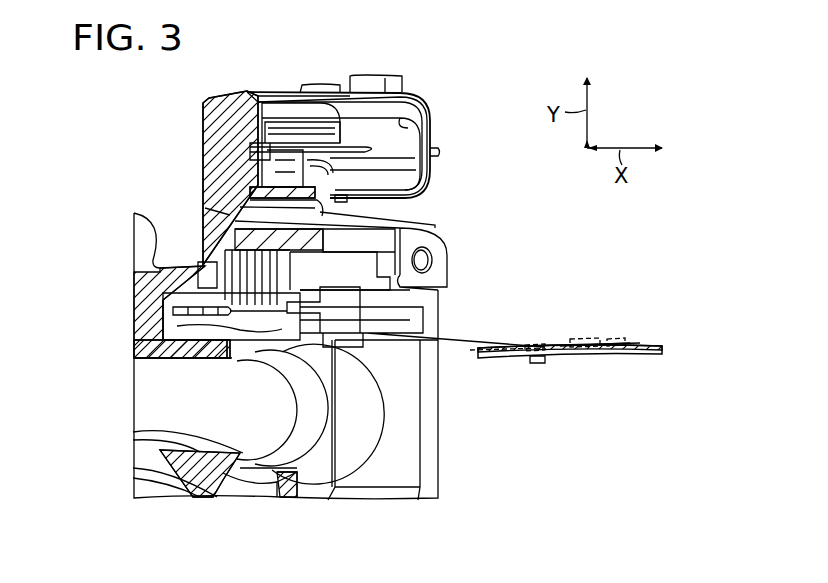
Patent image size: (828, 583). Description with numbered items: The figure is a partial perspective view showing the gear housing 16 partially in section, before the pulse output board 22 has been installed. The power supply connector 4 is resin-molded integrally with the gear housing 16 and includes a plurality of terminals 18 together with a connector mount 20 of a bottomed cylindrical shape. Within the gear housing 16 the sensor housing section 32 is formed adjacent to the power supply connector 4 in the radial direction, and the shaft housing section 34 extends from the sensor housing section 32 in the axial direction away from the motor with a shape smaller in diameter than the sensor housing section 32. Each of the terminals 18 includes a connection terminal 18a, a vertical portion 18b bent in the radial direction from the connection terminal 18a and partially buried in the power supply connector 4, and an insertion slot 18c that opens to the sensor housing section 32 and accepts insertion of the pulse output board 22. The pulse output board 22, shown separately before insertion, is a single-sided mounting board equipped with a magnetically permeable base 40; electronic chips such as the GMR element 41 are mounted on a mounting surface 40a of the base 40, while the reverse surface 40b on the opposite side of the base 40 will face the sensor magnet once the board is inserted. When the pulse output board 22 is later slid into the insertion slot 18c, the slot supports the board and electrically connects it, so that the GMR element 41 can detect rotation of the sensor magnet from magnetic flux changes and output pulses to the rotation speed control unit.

The power supply connector 4 is at (290, 83).
The gear housing 16 is at (200, 120).
The terminals 18 is at (216, 255).
The connection terminal 18a is at (425, 178).
The vertical portion 18b is at (205, 208).
The insertion slot 18c is at (163, 318).
The connector mount 20 is at (430, 133).
The pulse output board 22 is at (605, 313).
The sensor housing section 32 is at (390, 415).
The shaft housing section 34 is at (221, 415).
The base 40 is at (663, 350).
The mounting surface 40a is at (636, 342).
The reverse surface 40b is at (557, 362).
The GMR element 41 is at (578, 338).